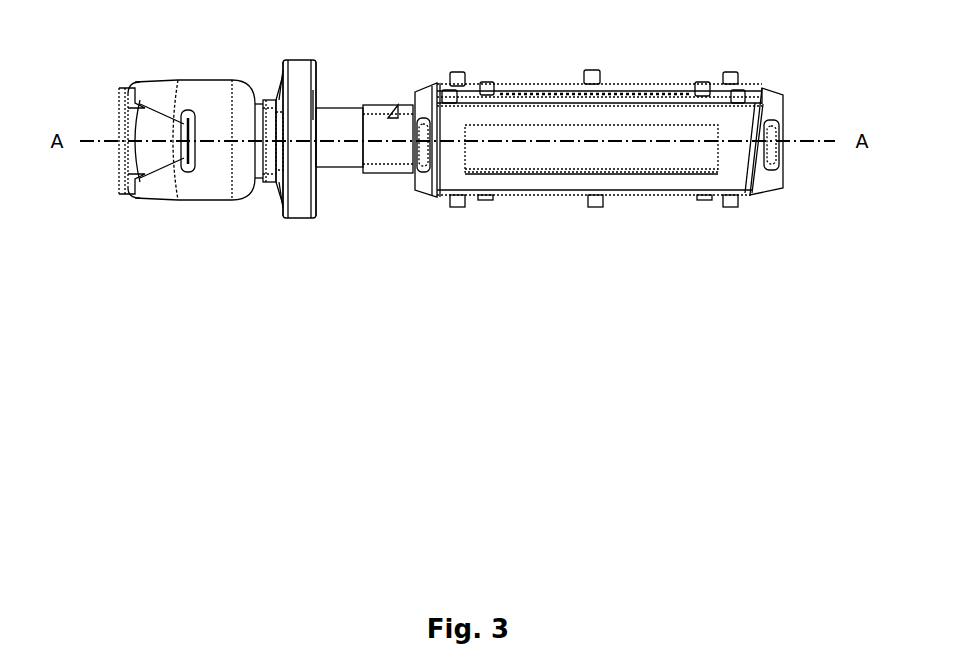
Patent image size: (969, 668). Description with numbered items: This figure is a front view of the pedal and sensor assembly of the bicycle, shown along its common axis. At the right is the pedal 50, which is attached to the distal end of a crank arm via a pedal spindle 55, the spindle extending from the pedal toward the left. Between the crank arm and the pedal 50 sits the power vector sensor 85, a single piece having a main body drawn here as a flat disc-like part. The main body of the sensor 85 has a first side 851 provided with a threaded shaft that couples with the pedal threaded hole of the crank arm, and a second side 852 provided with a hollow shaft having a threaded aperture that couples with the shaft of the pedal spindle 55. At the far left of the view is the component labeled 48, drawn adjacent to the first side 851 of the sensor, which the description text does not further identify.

The chuck 48 is at (165, 92).
The power vector sensor 85 is at (297, 70).
The first side 851 is at (281, 186).
The second side 852 is at (318, 190).
The pedal spindle 55 is at (383, 137).
The pedal 50 is at (450, 118).